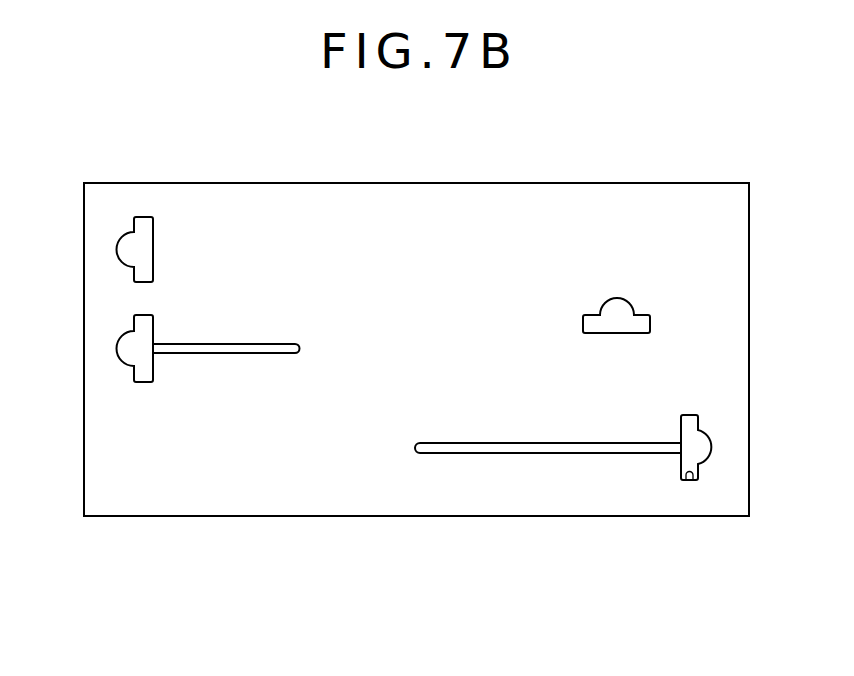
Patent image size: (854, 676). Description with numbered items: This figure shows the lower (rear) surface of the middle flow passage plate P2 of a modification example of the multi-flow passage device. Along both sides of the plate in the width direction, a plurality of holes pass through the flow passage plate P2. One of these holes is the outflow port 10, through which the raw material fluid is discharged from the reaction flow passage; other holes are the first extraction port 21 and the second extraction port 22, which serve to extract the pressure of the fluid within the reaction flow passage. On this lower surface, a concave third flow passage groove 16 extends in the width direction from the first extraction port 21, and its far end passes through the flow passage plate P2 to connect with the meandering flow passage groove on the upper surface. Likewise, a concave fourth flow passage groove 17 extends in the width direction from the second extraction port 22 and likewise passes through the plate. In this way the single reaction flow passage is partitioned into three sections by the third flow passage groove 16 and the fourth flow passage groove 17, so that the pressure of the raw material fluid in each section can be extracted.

The middle flow passage plate P2 is at (683, 170).
The outflow port 10 is at (588, 316).
The third flow passage groove 16 is at (258, 351).
The fourth flow passage groove 17 is at (480, 451).
The first extraction port 21 is at (150, 372).
The second extraction port 22 is at (689, 481).